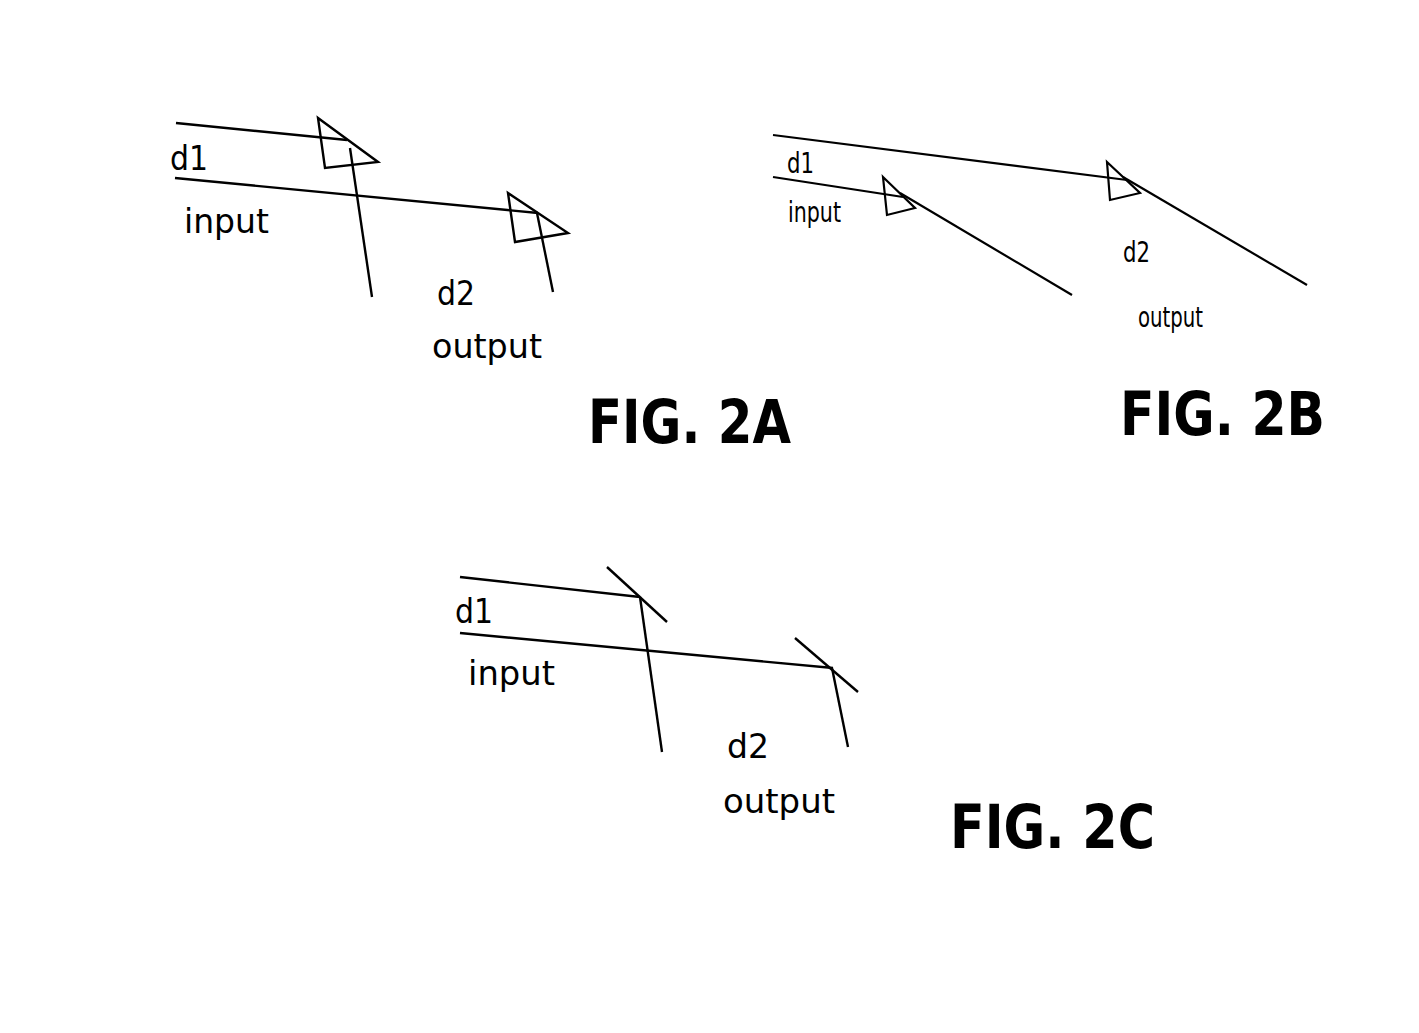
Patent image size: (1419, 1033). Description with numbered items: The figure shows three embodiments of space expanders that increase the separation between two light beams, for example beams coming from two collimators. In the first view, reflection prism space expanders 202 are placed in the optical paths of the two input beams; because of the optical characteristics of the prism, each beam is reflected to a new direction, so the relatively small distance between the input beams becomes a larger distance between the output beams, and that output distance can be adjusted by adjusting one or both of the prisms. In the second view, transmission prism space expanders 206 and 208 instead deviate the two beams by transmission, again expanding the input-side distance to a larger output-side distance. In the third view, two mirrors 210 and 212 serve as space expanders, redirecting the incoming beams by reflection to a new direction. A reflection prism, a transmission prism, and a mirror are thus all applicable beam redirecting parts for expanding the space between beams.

In FIG. 2A, the reflection prism space expander 202 is at (340, 124).
In FIG. 2B, the transmission prism space expander 206 is at (882, 215).
In FIG. 2B, the transmission prism space expander 208 is at (1137, 168).
In FIG. 2C, the mirror 210 is at (633, 582).
In FIG. 2C, the mirror 212 is at (823, 648).